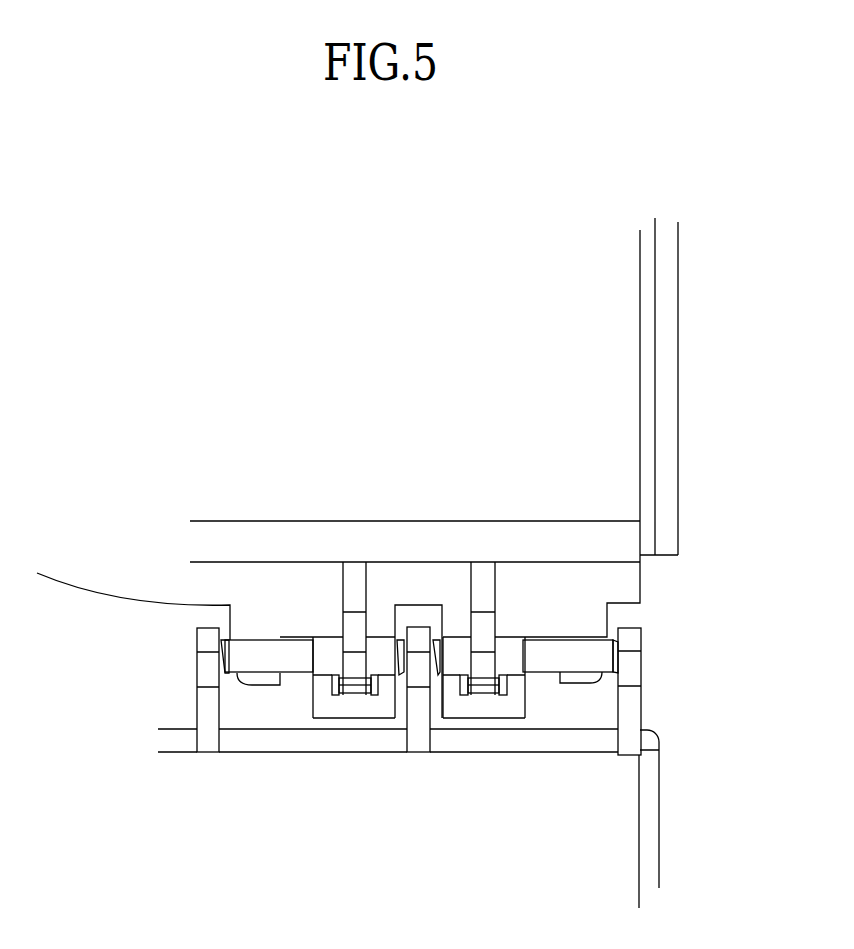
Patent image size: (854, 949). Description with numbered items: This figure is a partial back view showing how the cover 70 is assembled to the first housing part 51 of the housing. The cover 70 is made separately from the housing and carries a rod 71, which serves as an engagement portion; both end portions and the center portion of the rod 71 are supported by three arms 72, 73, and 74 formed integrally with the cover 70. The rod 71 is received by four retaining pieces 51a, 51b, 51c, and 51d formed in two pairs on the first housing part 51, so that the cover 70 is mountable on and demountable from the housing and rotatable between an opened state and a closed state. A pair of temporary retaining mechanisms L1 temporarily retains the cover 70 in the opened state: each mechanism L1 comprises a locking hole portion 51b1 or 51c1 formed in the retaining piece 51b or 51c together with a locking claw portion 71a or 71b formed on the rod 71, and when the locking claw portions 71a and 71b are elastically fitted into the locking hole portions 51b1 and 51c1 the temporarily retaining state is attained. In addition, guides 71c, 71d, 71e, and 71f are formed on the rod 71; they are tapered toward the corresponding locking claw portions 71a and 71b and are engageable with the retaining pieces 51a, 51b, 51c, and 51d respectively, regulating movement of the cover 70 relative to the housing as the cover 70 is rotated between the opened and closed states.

The first housing part 51 is at (640, 585).
The retaining piece 51a is at (585, 682).
The retaining piece 51b is at (472, 706).
The locking hole portion 51b1 is at (490, 694).
The retaining piece 51c is at (340, 703).
The locking hole portion 51c1 is at (358, 695).
The retaining piece 51d is at (258, 679).
The cover 70 is at (652, 807).
The rod 71 is at (543, 667).
The locking claw portion 71a is at (482, 683).
The locking claw portion 71b is at (348, 683).
The guide 71c is at (612, 648).
The guide 71d is at (436, 645).
The guide 71e is at (405, 645).
The guide 71f is at (222, 641).
The arm 72 is at (630, 676).
The arm 73 is at (418, 723).
The arm 74 is at (207, 670).
The temporary retaining mechanism L1 is at (512, 675).